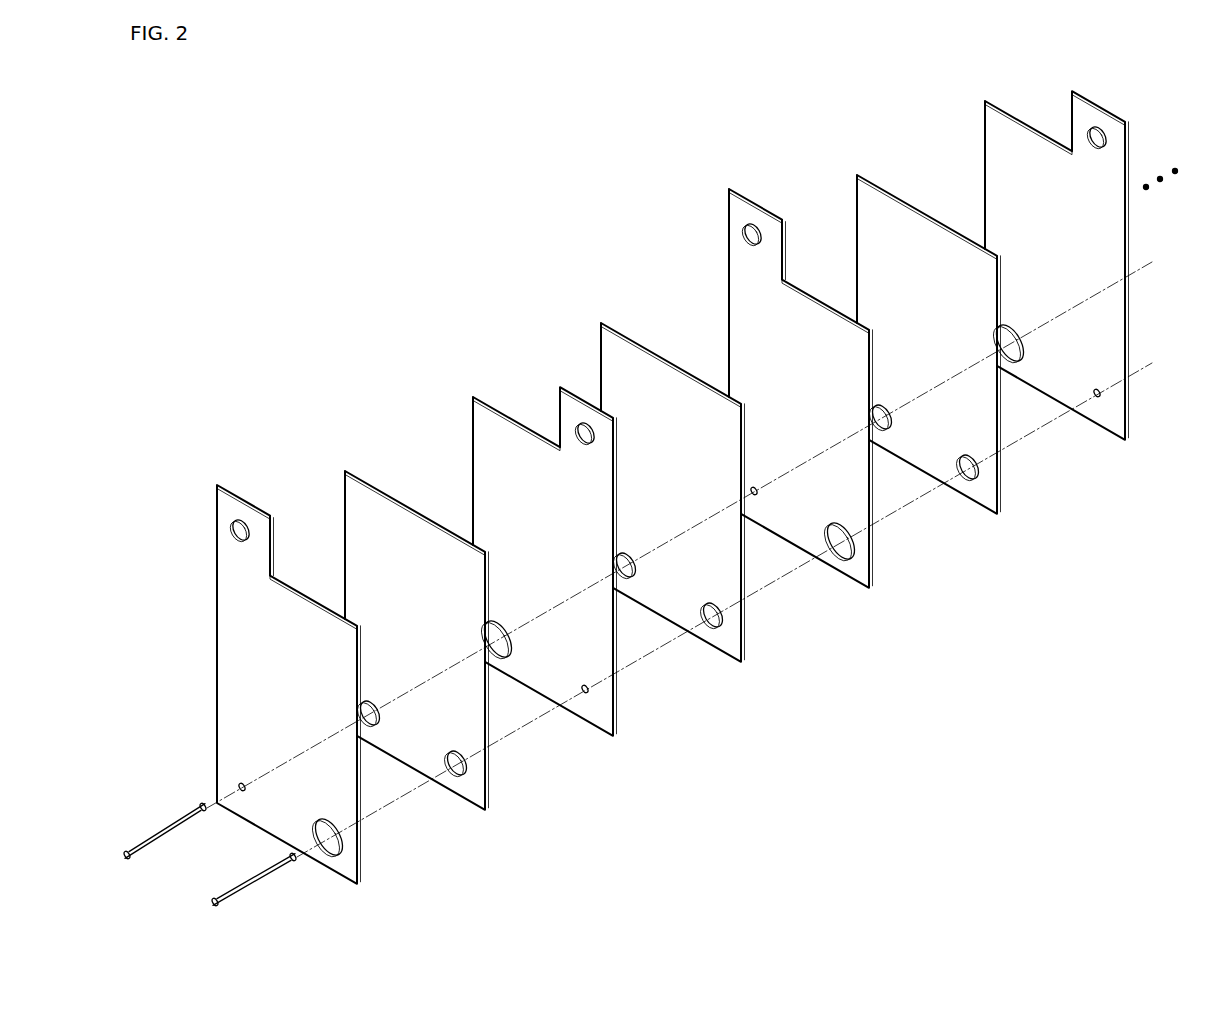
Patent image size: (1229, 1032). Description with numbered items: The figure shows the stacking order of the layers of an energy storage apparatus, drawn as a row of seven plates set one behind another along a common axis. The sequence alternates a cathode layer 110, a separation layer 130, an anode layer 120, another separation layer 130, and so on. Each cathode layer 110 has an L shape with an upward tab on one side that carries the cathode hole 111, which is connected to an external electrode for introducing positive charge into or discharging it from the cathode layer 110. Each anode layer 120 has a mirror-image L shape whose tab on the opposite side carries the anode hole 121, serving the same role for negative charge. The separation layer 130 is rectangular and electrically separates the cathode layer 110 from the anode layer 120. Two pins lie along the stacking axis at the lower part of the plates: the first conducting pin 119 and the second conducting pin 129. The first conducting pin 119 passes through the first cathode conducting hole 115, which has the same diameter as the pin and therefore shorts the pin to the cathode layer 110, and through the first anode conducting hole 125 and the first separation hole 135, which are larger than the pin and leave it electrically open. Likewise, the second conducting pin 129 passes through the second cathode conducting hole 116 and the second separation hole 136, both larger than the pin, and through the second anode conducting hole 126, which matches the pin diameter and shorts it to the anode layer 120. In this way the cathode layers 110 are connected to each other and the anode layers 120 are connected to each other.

The cathode layer 110 is at (225, 692).
The cathode hole 111 is at (238, 527).
The first cathode conducting hole 115 is at (239, 785).
The second cathode conducting hole 116 is at (340, 848).
The first conducting pin 119 is at (160, 838).
The anode layer 120 is at (487, 498).
The anode hole 121 is at (588, 424).
The first anode conducting hole 125 is at (505, 655).
The second anode conducting hole 126 is at (590, 691).
The second conducting pin 129 is at (248, 888).
The separation layer 130 is at (357, 574).
The first separation hole 135 is at (371, 727).
The second separation hole 136 is at (465, 770).